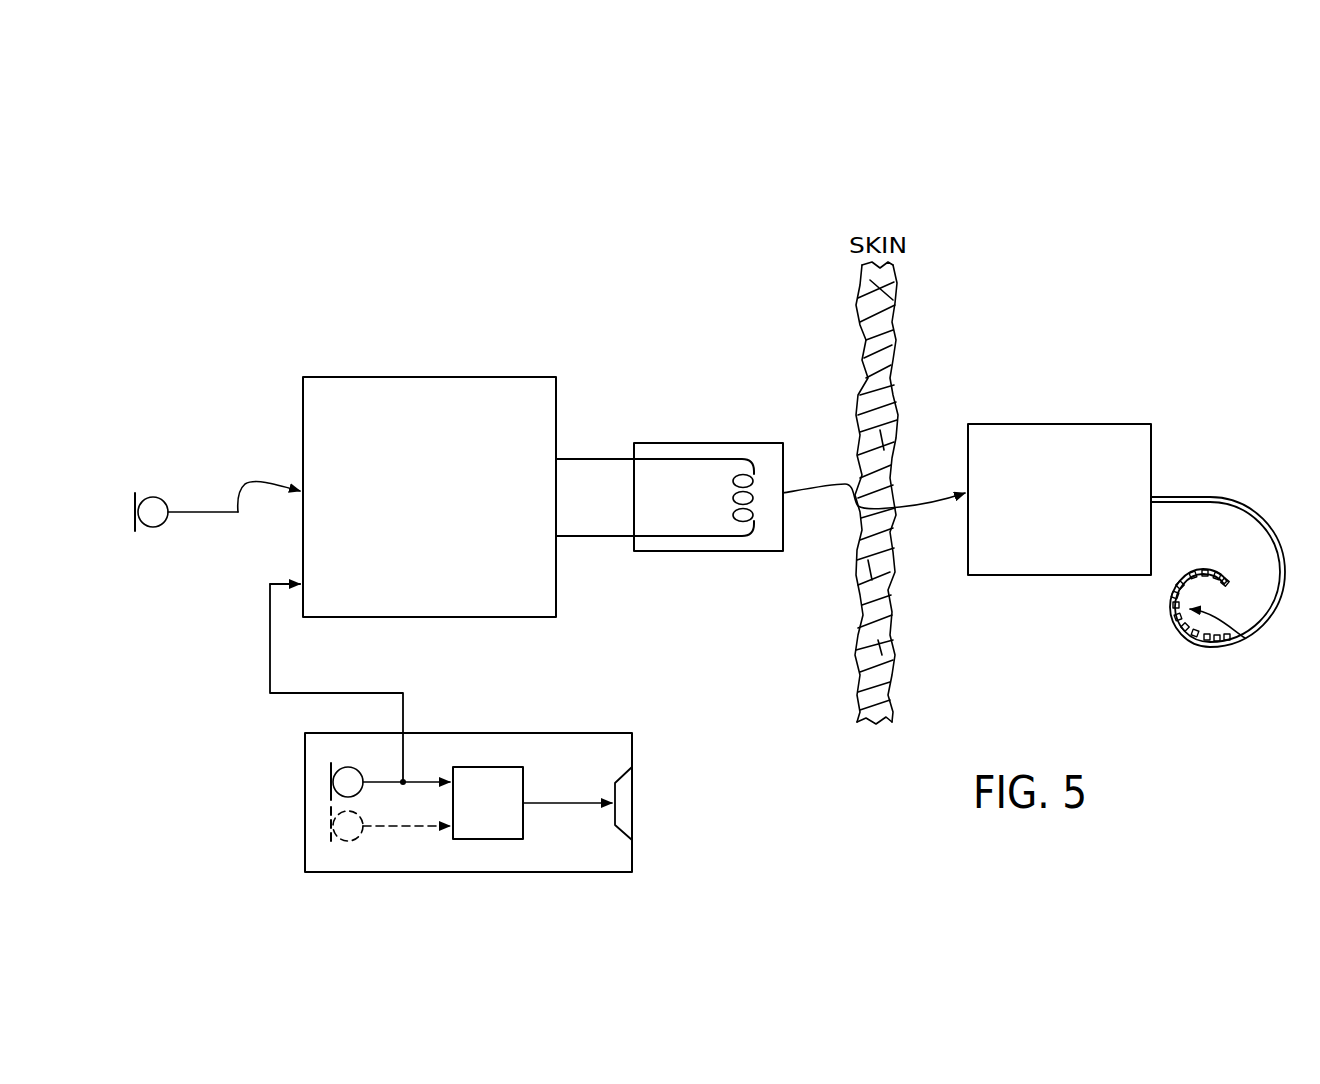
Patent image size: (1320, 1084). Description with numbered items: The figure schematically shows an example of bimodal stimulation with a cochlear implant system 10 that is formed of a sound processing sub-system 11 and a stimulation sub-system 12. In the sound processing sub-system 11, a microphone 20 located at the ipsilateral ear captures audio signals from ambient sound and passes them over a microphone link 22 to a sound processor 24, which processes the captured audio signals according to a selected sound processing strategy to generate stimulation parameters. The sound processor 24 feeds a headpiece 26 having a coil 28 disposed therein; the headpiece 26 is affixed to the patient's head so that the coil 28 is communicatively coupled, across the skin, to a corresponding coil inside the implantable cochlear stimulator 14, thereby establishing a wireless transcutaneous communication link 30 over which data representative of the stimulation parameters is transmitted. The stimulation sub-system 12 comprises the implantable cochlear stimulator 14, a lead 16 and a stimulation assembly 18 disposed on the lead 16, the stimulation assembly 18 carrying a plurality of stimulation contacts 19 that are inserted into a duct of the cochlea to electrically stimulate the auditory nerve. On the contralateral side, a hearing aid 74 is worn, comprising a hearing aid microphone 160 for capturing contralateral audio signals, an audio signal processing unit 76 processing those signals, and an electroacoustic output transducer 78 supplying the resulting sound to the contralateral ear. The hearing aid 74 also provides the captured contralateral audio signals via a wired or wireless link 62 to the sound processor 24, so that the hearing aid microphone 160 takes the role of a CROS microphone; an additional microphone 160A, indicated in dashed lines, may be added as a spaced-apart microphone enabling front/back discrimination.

The cochlear implant system 10 is at (759, 276).
The sound processing sub-system 11 is at (285, 318).
The stimulation sub-system 12 is at (1141, 349).
The implantable cochlear stimulator 14 is at (1043, 536).
The lead 16 is at (1280, 607).
The stimulation assembly 18 is at (1202, 647).
The stimulation contacts 19 is at (1245, 638).
The microphone 20 is at (152, 528).
The microphone link 22 is at (238, 512).
The sound processor 24 is at (443, 556).
The headpiece 26 is at (753, 443).
The coil 28 is at (753, 523).
The wireless transcutaneous communication link 30 is at (933, 507).
The link 62 is at (270, 661).
The hearing aid 74 is at (519, 725).
The audio signal processing unit 76 is at (474, 819).
The electroacoustic output transducer 78 is at (622, 795).
The hearing aid microphone 160 is at (331, 785).
The additional microphone 160A is at (331, 833).